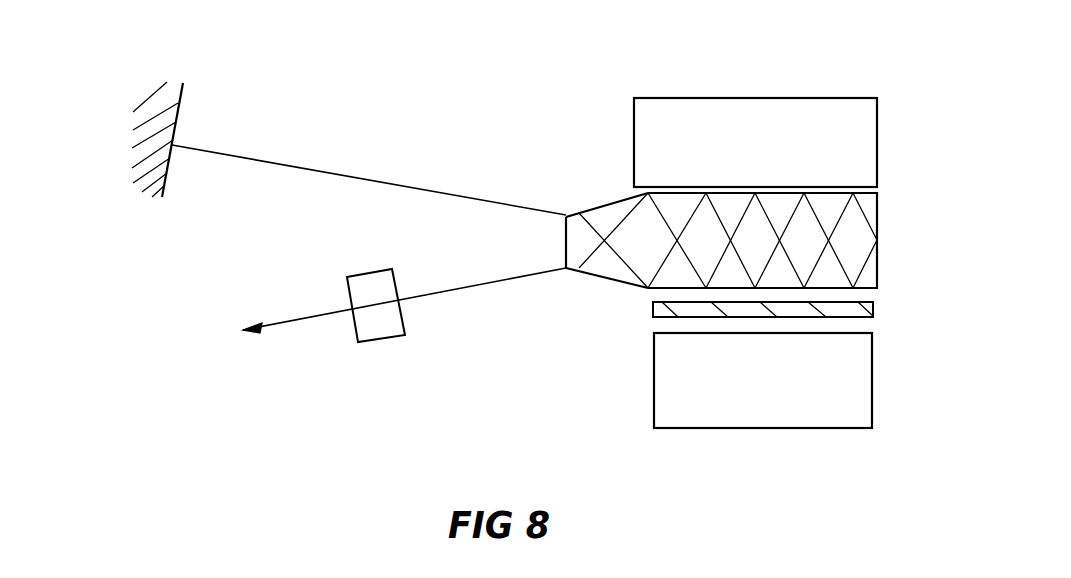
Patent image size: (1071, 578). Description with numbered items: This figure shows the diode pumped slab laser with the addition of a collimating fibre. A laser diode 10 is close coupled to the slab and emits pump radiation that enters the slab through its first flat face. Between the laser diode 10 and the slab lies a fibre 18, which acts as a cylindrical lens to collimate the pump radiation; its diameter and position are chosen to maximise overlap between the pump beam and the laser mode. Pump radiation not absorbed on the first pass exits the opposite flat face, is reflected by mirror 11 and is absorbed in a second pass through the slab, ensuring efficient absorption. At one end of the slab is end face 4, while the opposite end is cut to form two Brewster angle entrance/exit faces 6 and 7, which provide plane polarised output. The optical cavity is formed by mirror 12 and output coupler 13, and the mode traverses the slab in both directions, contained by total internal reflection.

The end face 4 is at (720, 250).
The Brewster angle entrance/exit face 6 is at (610, 280).
The Brewster angle entrance/exit face 7 is at (608, 205).
The laser diode 10 is at (654, 375).
The mirror 11 is at (740, 98).
The mirror 12 is at (172, 155).
The output coupler 13 is at (390, 315).
The fibre 18 is at (872, 305).